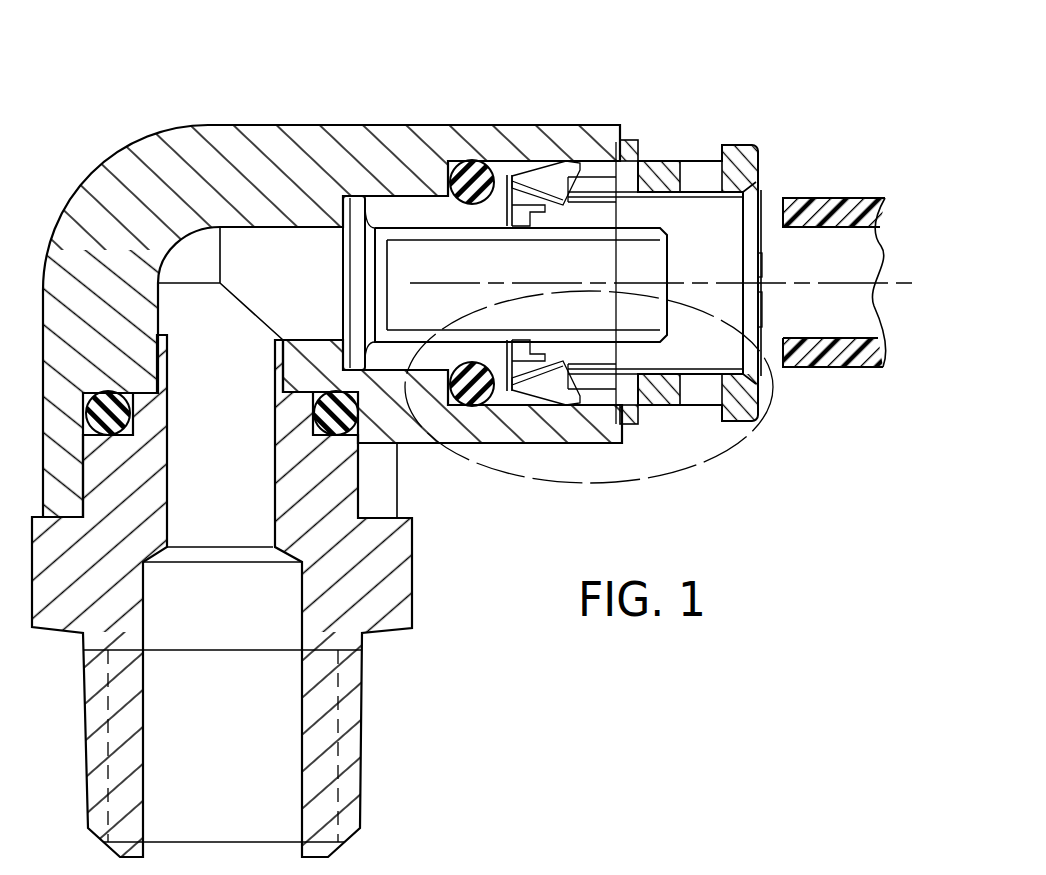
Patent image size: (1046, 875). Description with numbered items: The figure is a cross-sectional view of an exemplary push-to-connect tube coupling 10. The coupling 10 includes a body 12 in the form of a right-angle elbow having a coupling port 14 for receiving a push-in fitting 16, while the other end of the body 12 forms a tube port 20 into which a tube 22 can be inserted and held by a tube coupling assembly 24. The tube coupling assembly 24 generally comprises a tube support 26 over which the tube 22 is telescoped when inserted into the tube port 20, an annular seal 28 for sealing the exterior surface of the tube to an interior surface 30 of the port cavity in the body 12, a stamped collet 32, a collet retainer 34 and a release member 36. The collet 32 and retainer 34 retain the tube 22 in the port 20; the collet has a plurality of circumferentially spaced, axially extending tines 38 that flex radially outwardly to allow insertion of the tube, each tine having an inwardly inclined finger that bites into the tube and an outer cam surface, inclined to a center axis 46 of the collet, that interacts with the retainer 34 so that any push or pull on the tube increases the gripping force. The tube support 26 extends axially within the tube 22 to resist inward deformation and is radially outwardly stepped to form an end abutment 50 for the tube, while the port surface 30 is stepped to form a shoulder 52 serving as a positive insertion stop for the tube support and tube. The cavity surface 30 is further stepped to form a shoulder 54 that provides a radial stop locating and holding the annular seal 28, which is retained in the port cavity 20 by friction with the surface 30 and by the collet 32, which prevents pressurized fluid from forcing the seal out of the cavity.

The push-to-connect tube coupling 10 is at (452, 82).
The body 12 is at (345, 130).
The coupling port 14 is at (352, 538).
The push-in fitting 16 is at (362, 677).
The tube port 20 is at (768, 208).
The tube 22 is at (850, 198).
The tube coupling assembly 24 is at (665, 122).
The tube support 26 is at (403, 345).
The annular seal 28 is at (515, 168).
The interior surface 30 is at (548, 163).
The collet 32 is at (517, 398).
The collet retainer 34 is at (643, 413).
The release member 36 is at (752, 425).
The tines 38 is at (515, 368).
The center axis 46 is at (880, 250).
The end abutment 50 is at (400, 195).
The shoulder 52 is at (345, 253).
The shoulder 54 is at (478, 160).